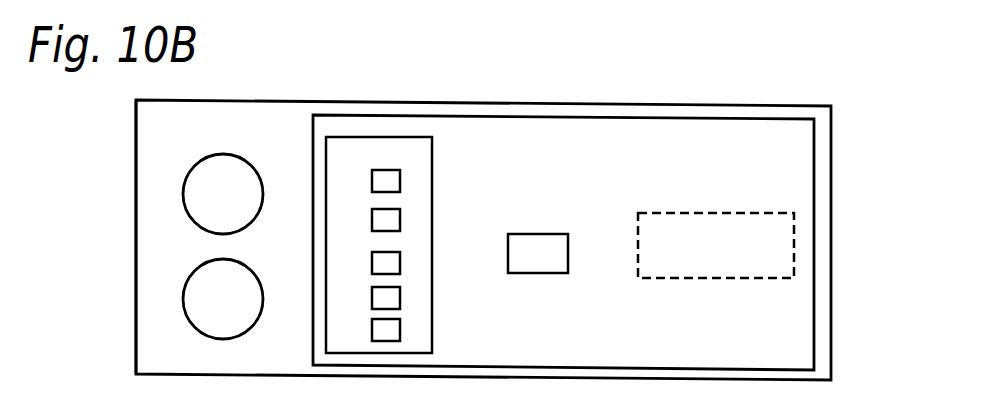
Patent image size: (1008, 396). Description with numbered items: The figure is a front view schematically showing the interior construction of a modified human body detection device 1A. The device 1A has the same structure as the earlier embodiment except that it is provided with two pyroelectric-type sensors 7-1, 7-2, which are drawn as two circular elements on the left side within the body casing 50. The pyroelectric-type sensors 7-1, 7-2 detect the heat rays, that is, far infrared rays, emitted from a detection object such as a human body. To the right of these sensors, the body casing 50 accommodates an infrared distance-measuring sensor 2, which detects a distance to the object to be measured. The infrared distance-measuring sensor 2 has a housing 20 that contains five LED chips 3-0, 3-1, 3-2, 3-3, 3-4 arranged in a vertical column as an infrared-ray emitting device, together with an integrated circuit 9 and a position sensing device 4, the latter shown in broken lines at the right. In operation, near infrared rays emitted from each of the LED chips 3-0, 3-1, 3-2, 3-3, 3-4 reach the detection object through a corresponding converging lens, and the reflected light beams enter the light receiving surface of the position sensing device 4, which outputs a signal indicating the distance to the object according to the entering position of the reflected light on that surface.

The human body detection device 1A is at (136, 177).
The infrared distance-measuring sensor 2 is at (816, 153).
The housing 20 is at (814, 175).
The body casing 50 is at (136, 337).
The pyroelectric-type sensor 7-1 is at (221, 338).
The pyroelectric-type sensor 7-2 is at (221, 154).
The LED chip 3-0 is at (400, 184).
The LED chip 3-1 is at (400, 217).
The LED chip 3-2 is at (400, 264).
The LED chip 3-3 is at (400, 300).
The LED chip 3-4 is at (400, 333).
The integrated circuit 9 is at (543, 234).
The position sensing device 4 is at (794, 231).